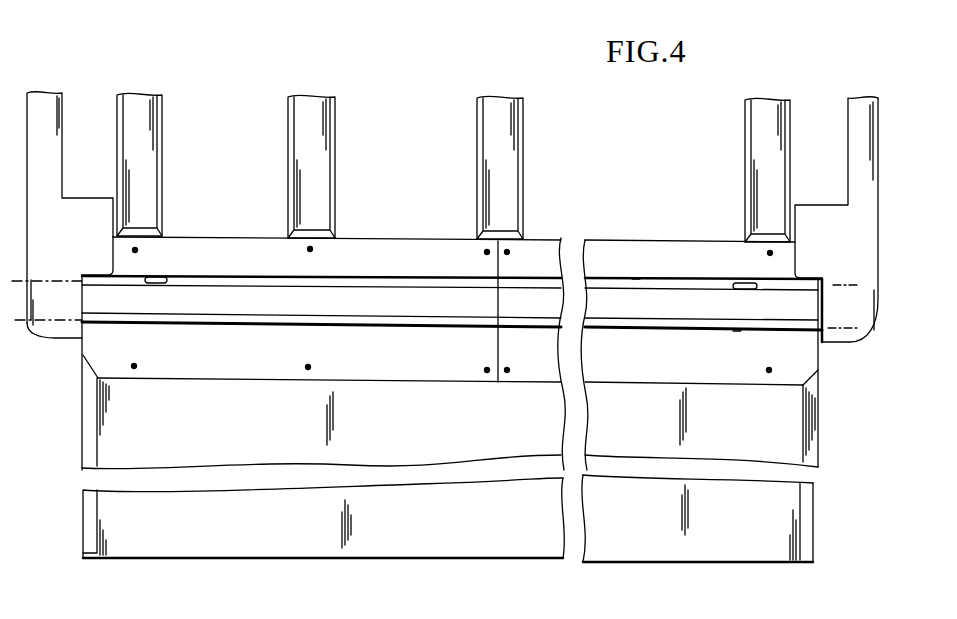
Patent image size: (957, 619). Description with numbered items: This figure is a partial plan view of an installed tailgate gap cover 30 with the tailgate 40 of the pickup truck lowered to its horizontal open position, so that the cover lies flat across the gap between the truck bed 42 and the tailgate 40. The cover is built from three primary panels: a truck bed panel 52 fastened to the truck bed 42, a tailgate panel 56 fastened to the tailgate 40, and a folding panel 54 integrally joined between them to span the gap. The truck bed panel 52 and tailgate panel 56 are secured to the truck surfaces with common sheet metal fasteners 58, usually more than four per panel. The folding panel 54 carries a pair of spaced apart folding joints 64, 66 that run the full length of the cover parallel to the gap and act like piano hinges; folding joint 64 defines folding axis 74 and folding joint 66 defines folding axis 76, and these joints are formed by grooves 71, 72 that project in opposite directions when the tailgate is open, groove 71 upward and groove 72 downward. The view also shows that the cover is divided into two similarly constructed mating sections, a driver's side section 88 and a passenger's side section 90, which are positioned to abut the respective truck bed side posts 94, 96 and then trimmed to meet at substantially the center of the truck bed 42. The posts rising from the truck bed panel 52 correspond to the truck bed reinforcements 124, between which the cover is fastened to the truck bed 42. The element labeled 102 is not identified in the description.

The tailgate gap cover 30 is at (232, 187).
The tailgate 40 is at (78, 535).
The truck bed 42 is at (417, 133).
The truck bed panel 52 is at (345, 235).
The folding panel 54 is at (200, 339).
The tailgate panel 56 is at (258, 385).
The sheet metal fasteners 58 is at (312, 248).
The folding joint 64 is at (210, 280).
The folding joint 66 is at (402, 330).
The groove 71 is at (632, 279).
The groove 72 is at (737, 332).
The folding axis 74 is at (48, 281).
The folding axis 76 is at (52, 327).
The driver's side section 88 is at (458, 385).
The passenger's side section 90 is at (770, 394).
The truck bed side post 94 is at (85, 198).
The truck bed side post 96 is at (813, 205).
The lower right shelf panel 102 is at (728, 562).
The truck bed reinforcements 124 is at (204, 82).